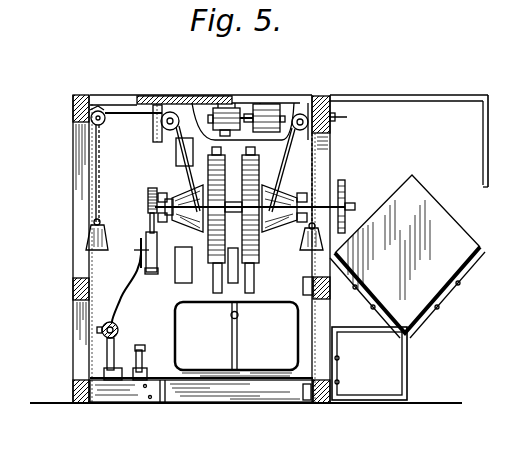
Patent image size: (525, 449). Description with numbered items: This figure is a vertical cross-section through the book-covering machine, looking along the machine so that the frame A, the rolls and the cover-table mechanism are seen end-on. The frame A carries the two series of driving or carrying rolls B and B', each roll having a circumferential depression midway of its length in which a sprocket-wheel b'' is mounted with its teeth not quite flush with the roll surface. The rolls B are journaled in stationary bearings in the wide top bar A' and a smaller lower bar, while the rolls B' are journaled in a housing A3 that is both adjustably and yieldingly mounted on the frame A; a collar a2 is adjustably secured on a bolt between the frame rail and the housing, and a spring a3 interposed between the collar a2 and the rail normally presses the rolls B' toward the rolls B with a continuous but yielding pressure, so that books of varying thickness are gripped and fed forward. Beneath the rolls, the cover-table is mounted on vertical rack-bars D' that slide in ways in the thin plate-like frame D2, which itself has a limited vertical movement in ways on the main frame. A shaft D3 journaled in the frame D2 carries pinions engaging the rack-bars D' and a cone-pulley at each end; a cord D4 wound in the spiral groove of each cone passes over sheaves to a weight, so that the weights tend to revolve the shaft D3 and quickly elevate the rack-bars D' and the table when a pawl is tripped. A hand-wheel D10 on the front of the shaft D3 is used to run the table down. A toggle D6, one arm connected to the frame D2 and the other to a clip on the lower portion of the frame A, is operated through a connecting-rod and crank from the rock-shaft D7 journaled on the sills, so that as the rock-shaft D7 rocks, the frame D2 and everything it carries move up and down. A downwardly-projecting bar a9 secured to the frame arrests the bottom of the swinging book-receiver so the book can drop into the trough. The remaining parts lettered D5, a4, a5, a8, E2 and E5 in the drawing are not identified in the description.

The frame A is at (174, 246).
The top bar A' is at (178, 143).
The housing A3 is at (304, 98).
The downwardly-projecting bar a9 is at (130, 258).
The driving or carrying rolls B is at (243, 108).
The driving or carrying rolls B' is at (269, 104).
The sprocket-wheel b'' is at (252, 91).
The rack-bars D' is at (228, 220).
The frame D2 is at (170, 329).
The shaft D3 is at (312, 146).
The cord D4 is at (99, 158).
The curved lever D5 is at (120, 287).
The toggle D6 is at (238, 338).
The rock-shaft D7 is at (97, 375).
The hand-wheel D10 is at (346, 200).
The collar a2 is at (196, 192).
The spring a3 is at (104, 237).
The ratchet a4 is at (148, 194).
The rod a5 is at (150, 275).
The pivot a8 is at (119, 329).
The hopper frame E2 is at (433, 297).
The hopper E5 is at (400, 245).